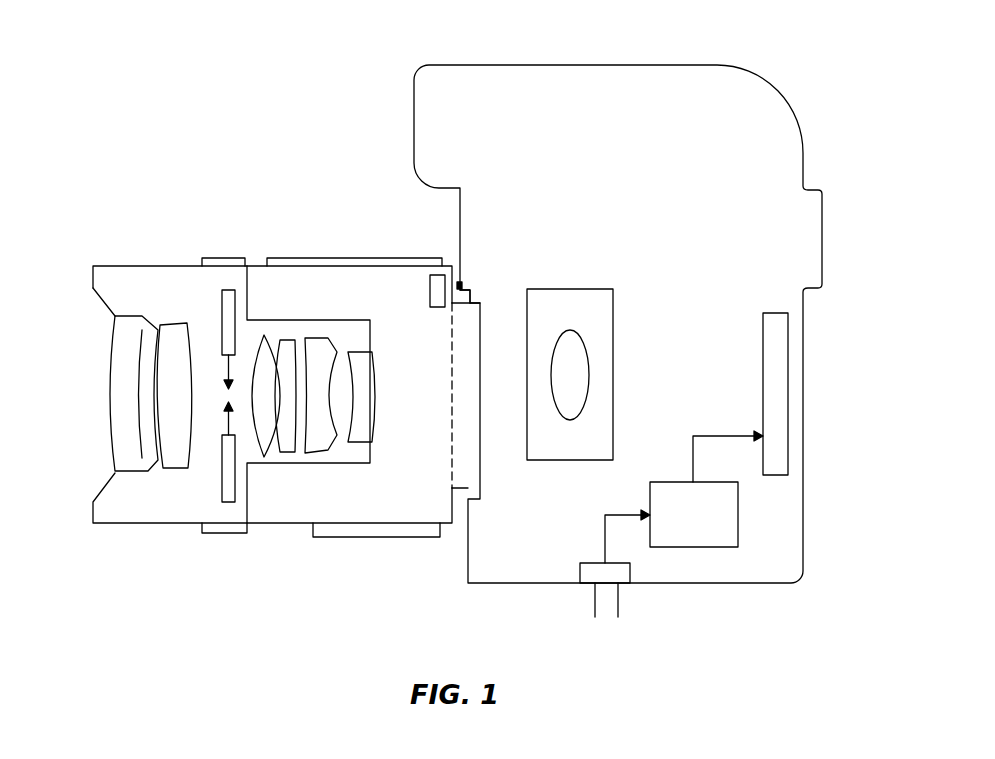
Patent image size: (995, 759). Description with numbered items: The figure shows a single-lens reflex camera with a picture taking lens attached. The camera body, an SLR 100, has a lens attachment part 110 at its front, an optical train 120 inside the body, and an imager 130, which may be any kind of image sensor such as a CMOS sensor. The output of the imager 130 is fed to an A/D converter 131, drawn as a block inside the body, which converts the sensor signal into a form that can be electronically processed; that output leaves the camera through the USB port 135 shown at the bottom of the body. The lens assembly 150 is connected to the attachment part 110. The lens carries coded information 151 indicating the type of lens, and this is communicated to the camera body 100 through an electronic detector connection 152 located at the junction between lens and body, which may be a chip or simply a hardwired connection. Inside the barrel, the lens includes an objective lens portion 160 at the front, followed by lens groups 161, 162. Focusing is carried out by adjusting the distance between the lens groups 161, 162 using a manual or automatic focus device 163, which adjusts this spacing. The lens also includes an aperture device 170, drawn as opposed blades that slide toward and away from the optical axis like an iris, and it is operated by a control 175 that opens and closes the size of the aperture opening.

The SLR 100 is at (690, 65).
The lens attachment part 110 is at (469, 283).
The optical train 120 is at (595, 289).
The imager 130 is at (788, 343).
The A/D converter 131 is at (738, 512).
The USB port 135 is at (590, 563).
The lens assembly 150 is at (110, 265).
The coded information 151 is at (440, 270).
The electronic detector connection 152 is at (457, 290).
The objective lens portion 160 is at (110, 356).
The lens group 161 is at (153, 417).
The lens group 162 is at (306, 329).
The focus device 163 is at (322, 538).
The aperture device 170 is at (218, 307).
The control 175 is at (215, 535).